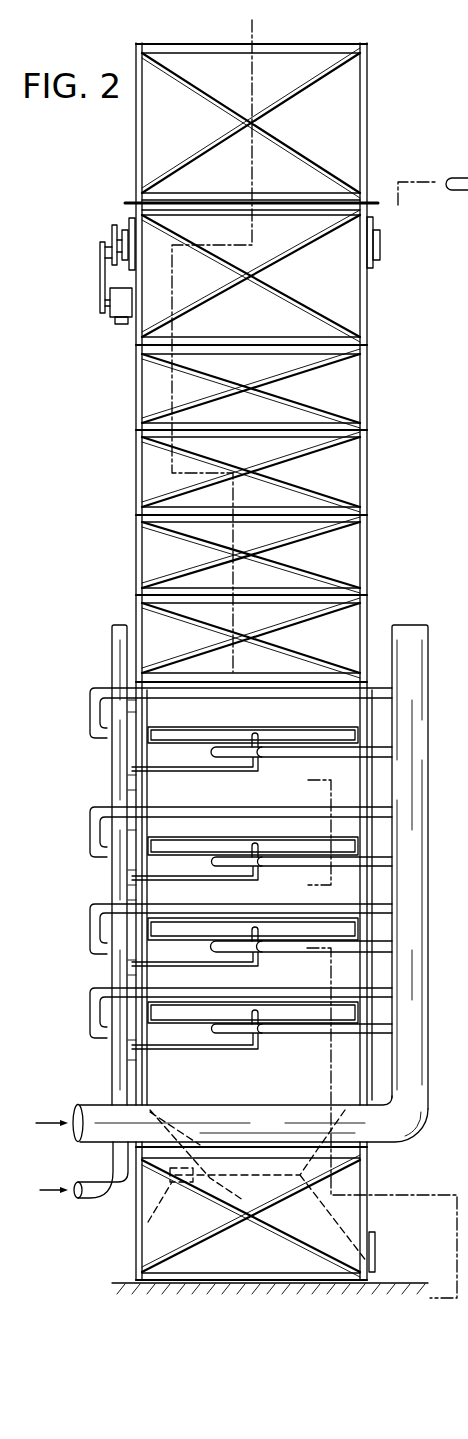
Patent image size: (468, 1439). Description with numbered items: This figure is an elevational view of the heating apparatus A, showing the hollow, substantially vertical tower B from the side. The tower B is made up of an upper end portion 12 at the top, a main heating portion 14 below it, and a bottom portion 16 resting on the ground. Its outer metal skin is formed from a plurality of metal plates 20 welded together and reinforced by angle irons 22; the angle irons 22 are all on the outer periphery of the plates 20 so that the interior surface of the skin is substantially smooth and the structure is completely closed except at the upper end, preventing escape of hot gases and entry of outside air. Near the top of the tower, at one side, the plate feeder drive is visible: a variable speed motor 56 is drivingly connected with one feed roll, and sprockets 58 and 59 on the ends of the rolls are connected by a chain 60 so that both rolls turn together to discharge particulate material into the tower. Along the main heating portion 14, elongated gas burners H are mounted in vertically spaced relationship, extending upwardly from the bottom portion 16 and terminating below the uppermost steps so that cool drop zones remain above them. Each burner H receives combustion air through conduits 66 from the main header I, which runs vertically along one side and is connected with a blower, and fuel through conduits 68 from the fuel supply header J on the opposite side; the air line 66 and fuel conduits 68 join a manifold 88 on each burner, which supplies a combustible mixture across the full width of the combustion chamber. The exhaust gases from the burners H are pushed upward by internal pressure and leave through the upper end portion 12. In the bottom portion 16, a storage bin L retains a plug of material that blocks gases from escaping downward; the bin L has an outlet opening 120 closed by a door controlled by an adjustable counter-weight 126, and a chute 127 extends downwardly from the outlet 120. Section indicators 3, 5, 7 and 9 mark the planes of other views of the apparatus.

The upper end portion 12 is at (251, 349).
The metal plates 20 is at (168, 127).
The angle irons 22 is at (150, 60).
The heating apparatus A is at (264, 118).
The tower B is at (376, 453).
The variable speed motor 56 is at (111, 315).
The sprocket 58 is at (100, 268).
The sprocket 59 is at (113, 224).
The chain 60 is at (121, 240).
The section line 7- 7 is at (212, 340).
The section line 9- 9 is at (418, 204).
The section line 5- 5 is at (299, 835).
The section line 3- 3 is at (373, 1135).
The fuel supply header J is at (84, 911).
The main header I is at (423, 865).
The storage bin L is at (380, 1141).
The main heating portion 14 is at (419, 895).
The gas burners H is at (307, 873).
The manifold 88 is at (150, 739).
The conduits 66 is at (214, 745).
The conduits 68 is at (457, 177).
The bottom portion 16 is at (270, 1232).
The outlet opening 120 is at (340, 1188).
The adjustable counter-weight 126 is at (149, 1222).
The chute 127 is at (376, 1256).